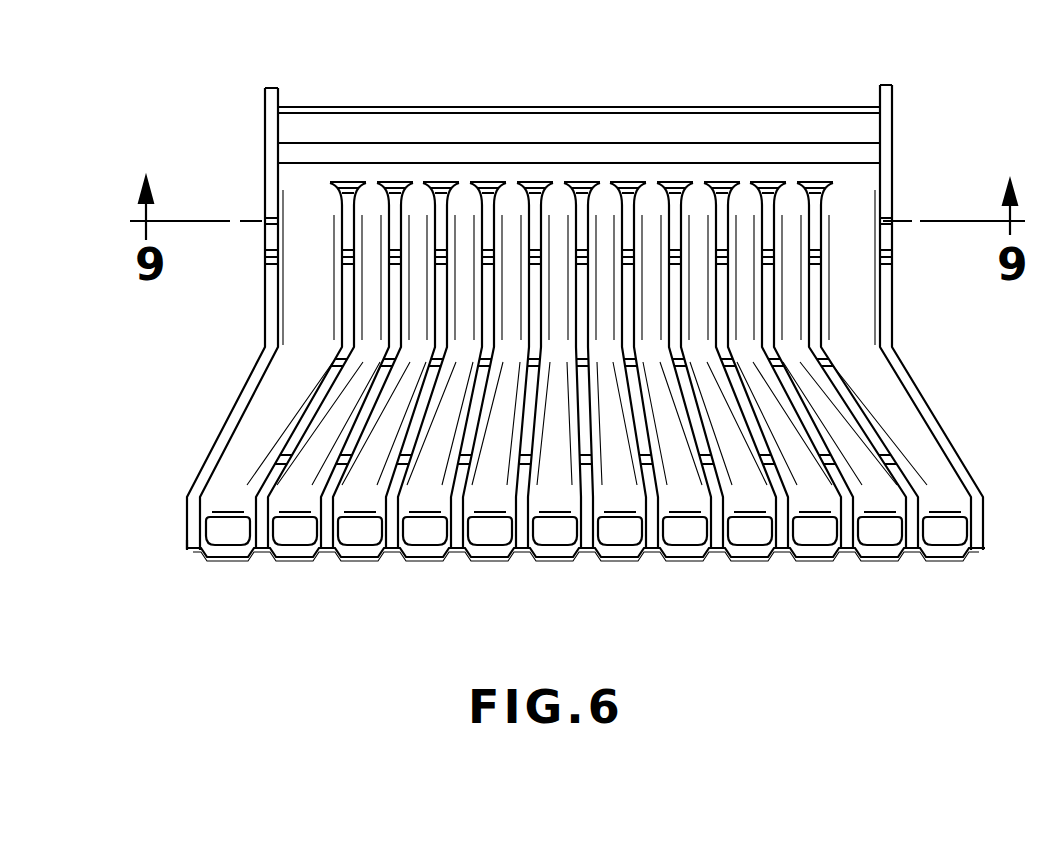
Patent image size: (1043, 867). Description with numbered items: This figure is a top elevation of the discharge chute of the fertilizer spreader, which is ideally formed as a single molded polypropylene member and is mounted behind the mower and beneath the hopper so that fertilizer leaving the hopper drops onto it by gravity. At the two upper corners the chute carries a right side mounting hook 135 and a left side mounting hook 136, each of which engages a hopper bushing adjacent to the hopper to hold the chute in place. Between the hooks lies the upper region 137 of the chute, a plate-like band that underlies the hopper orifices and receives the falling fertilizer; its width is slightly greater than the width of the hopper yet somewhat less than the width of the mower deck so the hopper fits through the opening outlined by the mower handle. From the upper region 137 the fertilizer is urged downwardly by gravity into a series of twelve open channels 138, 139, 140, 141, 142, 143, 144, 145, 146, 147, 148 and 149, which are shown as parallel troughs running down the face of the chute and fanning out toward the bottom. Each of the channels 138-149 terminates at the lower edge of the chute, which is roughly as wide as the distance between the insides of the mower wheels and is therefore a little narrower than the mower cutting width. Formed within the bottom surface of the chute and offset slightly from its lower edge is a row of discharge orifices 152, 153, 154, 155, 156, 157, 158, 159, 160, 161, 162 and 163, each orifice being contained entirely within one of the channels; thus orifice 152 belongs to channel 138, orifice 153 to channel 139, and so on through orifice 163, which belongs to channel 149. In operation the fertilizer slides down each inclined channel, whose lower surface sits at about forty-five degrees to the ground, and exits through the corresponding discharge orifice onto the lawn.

The right side mounting hook 135 is at (893, 88).
The left side mounting hook 136 is at (265, 92).
The upper region 137 is at (842, 125).
The open channel 138 is at (310, 190).
The open channel 139 is at (368, 198).
The open channel 140 is at (420, 203).
The open channel 141 is at (465, 203).
The open channel 142 is at (513, 203).
The open channel 143 is at (561, 200).
The open channel 144 is at (607, 203).
The open channel 145 is at (657, 203).
The open channel 146 is at (704, 203).
The open channel 147 is at (743, 197).
The open channel 148 is at (790, 207).
The open channel 149 is at (858, 192).
The discharge orifice 152 is at (210, 546).
The discharge orifice 153 is at (284, 546).
The discharge orifice 154 is at (349, 546).
The discharge orifice 155 is at (426, 546).
The discharge orifice 156 is at (497, 546).
The discharge orifice 157 is at (549, 546).
The discharge orifice 158 is at (619, 546).
The discharge orifice 159 is at (672, 546).
The discharge orifice 160 is at (736, 546).
The discharge orifice 161 is at (800, 546).
The discharge orifice 162 is at (867, 546).
The discharge orifice 163 is at (937, 546).